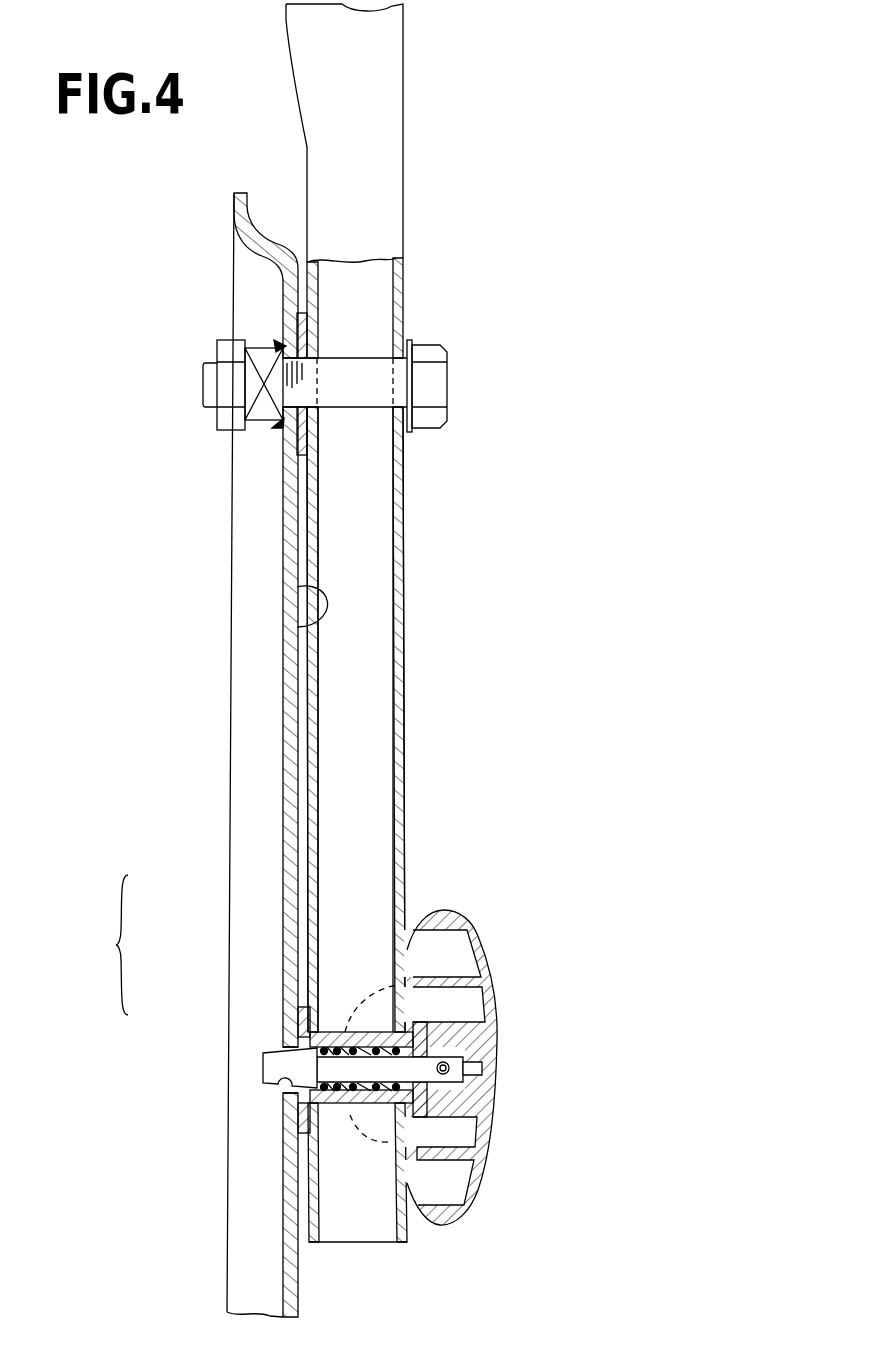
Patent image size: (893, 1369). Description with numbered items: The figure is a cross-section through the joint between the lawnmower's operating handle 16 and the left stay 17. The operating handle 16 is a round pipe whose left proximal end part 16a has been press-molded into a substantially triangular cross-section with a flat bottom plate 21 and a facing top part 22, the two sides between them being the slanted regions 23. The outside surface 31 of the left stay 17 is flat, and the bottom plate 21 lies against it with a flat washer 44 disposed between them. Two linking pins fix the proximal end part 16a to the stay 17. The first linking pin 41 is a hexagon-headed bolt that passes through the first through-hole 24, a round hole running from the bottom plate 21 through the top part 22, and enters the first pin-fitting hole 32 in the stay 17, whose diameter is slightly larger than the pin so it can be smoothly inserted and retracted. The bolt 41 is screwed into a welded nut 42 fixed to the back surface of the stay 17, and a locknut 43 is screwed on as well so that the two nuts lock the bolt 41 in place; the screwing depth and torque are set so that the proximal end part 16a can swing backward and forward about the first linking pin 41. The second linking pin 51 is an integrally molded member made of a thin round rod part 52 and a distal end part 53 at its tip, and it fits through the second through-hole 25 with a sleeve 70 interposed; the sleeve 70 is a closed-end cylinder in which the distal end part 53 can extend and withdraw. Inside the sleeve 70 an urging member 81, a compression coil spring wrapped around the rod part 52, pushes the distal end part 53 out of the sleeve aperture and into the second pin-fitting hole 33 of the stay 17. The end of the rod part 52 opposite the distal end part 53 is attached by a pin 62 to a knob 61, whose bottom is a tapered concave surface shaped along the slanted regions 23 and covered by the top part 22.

The operating handle 16 is at (403, 53).
The left proximal end part 16a is at (405, 623).
The left stay 17 is at (256, 741).
The bottom plate 21 is at (318, 773).
The top part 22 is at (402, 789).
The slanted regions 23 is at (366, 849).
The first through-hole 24 is at (317, 406).
The second through-hole 25 is at (287, 1103).
The surface of the left stay 31 is at (297, 627).
The first pin-fitting hole 32 is at (276, 425).
The second pin-fitting hole 33 is at (273, 1090).
The first linking pin 41 is at (437, 375).
The welded nut 42 is at (278, 345).
The locknut 43 is at (262, 357).
The flat washer 44 is at (300, 457).
The second linking pin 51 is at (103, 945).
The rod part 52 is at (343, 1030).
The distal end part 53 is at (287, 1060).
The knob 61 is at (488, 1134).
The pin 62 is at (450, 1062).
The sleeve 70 is at (378, 1033).
The urging member 81 is at (413, 1022).